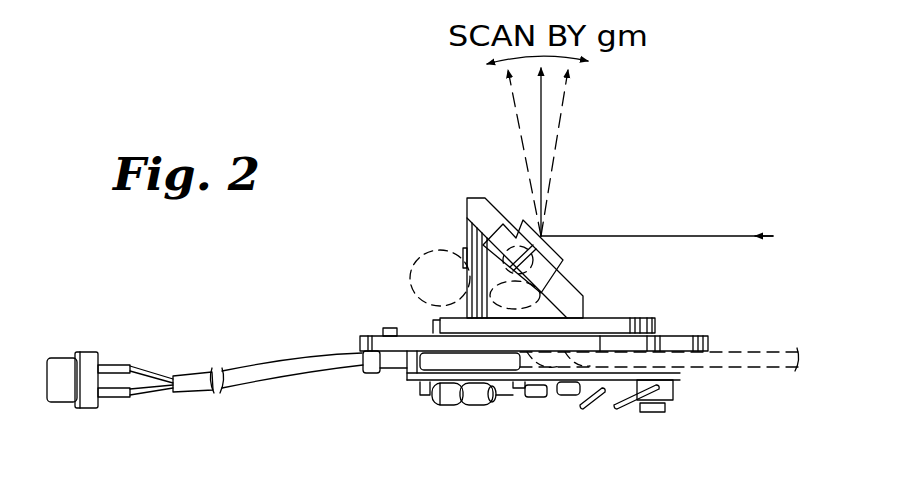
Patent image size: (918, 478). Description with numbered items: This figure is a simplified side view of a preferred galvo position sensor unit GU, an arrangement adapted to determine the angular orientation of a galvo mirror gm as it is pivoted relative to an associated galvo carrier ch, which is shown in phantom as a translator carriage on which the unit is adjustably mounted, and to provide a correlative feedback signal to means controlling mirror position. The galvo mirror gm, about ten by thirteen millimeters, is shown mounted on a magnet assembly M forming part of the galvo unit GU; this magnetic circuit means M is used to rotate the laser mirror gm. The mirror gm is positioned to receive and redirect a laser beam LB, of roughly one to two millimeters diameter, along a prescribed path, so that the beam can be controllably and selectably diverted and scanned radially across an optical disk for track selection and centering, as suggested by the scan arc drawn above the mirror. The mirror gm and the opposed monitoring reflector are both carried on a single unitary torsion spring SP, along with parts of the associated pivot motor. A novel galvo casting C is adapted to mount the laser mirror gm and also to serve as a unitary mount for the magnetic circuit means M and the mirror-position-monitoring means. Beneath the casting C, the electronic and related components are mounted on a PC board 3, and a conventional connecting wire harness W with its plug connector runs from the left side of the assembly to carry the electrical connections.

The galvo position sensor unit GU is at (655, 146).
The laser beam LB is at (697, 233).
The magnet assembly M is at (464, 208).
The galvo mirror gm is at (561, 253).
The torsion spring SP is at (580, 300).
The galvo casting C is at (657, 325).
The galvo carrier ch is at (730, 352).
The PC board 3 is at (407, 383).
The connecting wire harness W is at (247, 365).